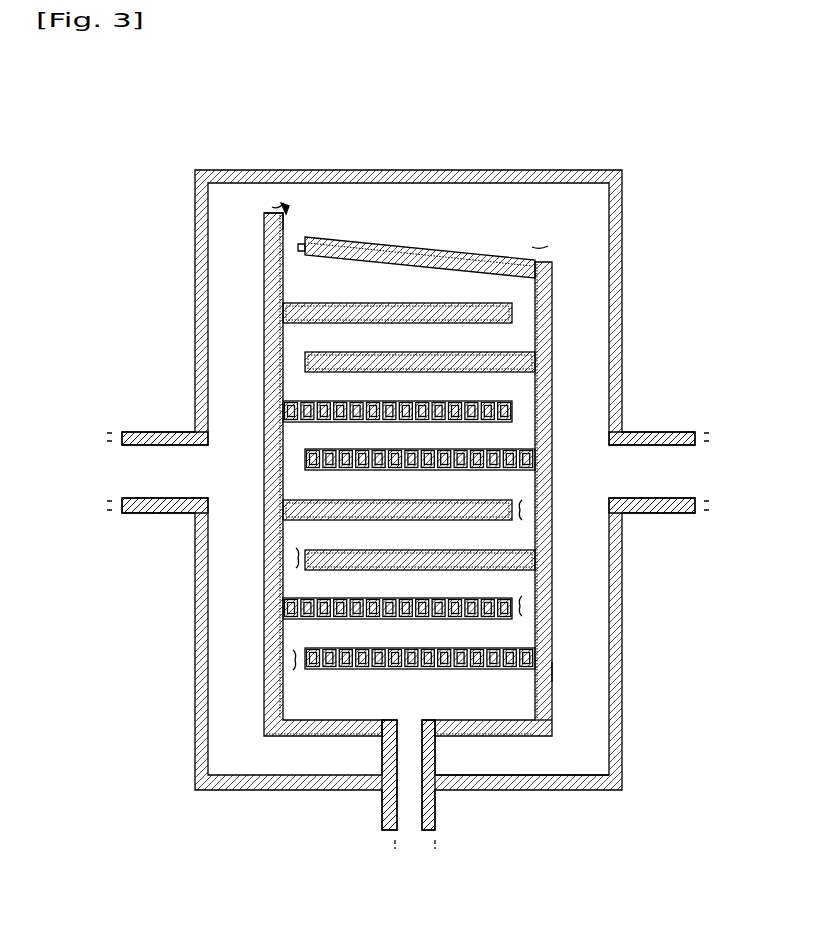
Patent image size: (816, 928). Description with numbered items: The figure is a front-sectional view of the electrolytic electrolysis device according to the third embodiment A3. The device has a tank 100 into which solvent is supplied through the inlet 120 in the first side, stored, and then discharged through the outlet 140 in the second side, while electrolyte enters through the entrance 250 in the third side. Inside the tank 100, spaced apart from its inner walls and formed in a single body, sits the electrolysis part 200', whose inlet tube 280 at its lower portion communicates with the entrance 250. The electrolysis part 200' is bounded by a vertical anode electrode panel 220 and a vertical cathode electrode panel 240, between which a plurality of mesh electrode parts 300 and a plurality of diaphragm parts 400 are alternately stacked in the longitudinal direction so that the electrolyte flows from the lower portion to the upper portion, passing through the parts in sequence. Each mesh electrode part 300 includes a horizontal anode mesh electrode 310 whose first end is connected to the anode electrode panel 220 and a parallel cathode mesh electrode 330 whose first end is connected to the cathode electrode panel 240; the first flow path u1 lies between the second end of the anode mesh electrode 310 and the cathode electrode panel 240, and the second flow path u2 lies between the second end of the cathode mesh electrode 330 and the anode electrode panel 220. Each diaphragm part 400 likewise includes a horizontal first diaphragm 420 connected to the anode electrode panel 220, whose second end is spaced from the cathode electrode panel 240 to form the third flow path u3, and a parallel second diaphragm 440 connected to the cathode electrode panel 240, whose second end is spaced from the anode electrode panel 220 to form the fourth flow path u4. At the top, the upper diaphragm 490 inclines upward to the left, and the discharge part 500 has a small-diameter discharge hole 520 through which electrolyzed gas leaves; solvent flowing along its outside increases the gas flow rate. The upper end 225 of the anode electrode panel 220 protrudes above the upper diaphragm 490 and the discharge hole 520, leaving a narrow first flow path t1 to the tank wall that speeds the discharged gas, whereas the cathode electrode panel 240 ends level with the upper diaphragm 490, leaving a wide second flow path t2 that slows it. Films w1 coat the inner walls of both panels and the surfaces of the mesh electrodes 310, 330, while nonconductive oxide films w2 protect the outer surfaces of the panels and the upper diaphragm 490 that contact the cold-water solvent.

The third embodiment A3 is at (579, 152).
The tank 100 is at (623, 277).
The inlet 120 is at (153, 431).
The outlet 140 is at (684, 431).
The entrance 250 is at (437, 806).
The inlet tube 280 is at (440, 763).
The electrolysis part 200' is at (377, 486).
The anode electrode panel 220 is at (264, 699).
The upper end of the anode electrode panel 225 is at (265, 217).
The cathode electrode panel 240 is at (553, 700).
The upper diaphragm 490 is at (413, 252).
The discharge hole 520 is at (296, 247).
The discharge part 500 is at (283, 207).
The first flow path t1 is at (282, 206).
The second flow path t2 is at (541, 244).
The diaphragm part 400 is at (560, 317).
The first diaphragm 420 is at (283, 509).
The second diaphragm 440 is at (303, 558).
The mesh electrode part 300 is at (258, 415).
The anode mesh electrode 310 is at (370, 620).
The cathode mesh electrode 330 is at (334, 668).
The first flow path u1 is at (524, 603).
The second flow path u2 is at (294, 661).
The third flow path u3 is at (524, 508).
The fourth flow path u4 is at (296, 558).
The film w1 is at (535, 720).
The nonconductive oxide film w2 is at (553, 672).